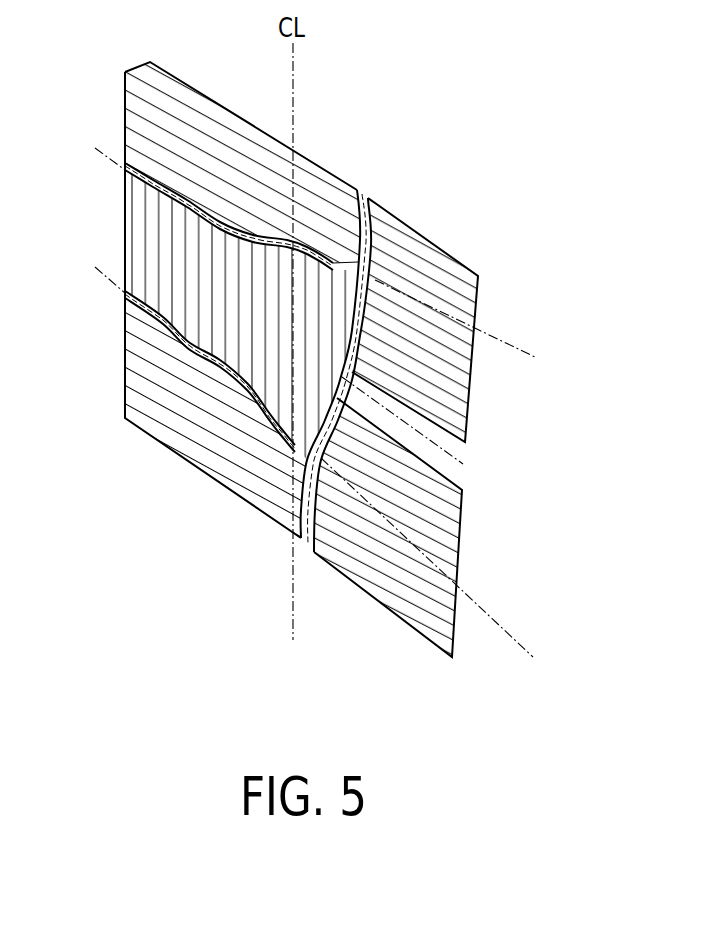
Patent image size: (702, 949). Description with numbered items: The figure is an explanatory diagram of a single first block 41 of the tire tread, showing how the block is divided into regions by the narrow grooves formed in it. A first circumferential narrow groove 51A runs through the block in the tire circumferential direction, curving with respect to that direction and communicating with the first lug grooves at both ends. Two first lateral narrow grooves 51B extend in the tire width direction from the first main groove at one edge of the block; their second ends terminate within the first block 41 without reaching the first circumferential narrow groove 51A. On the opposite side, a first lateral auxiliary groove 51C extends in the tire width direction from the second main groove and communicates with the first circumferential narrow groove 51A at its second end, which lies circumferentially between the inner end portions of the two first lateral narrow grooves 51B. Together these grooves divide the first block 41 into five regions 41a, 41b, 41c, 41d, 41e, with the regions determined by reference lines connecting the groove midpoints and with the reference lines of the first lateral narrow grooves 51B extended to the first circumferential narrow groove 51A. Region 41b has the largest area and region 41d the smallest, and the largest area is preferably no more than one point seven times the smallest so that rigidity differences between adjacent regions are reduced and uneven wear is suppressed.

The first block 41 is at (442, 223).
The region 41a is at (148, 103).
The region 41b is at (147, 240).
The region 41c is at (138, 370).
The region 41d is at (457, 292).
The region 41e is at (445, 533).
The first circumferential narrow groove 51A is at (314, 478).
The first lateral narrow groove 51B is at (159, 185).
The first lateral auxiliary groove 51C is at (418, 440).